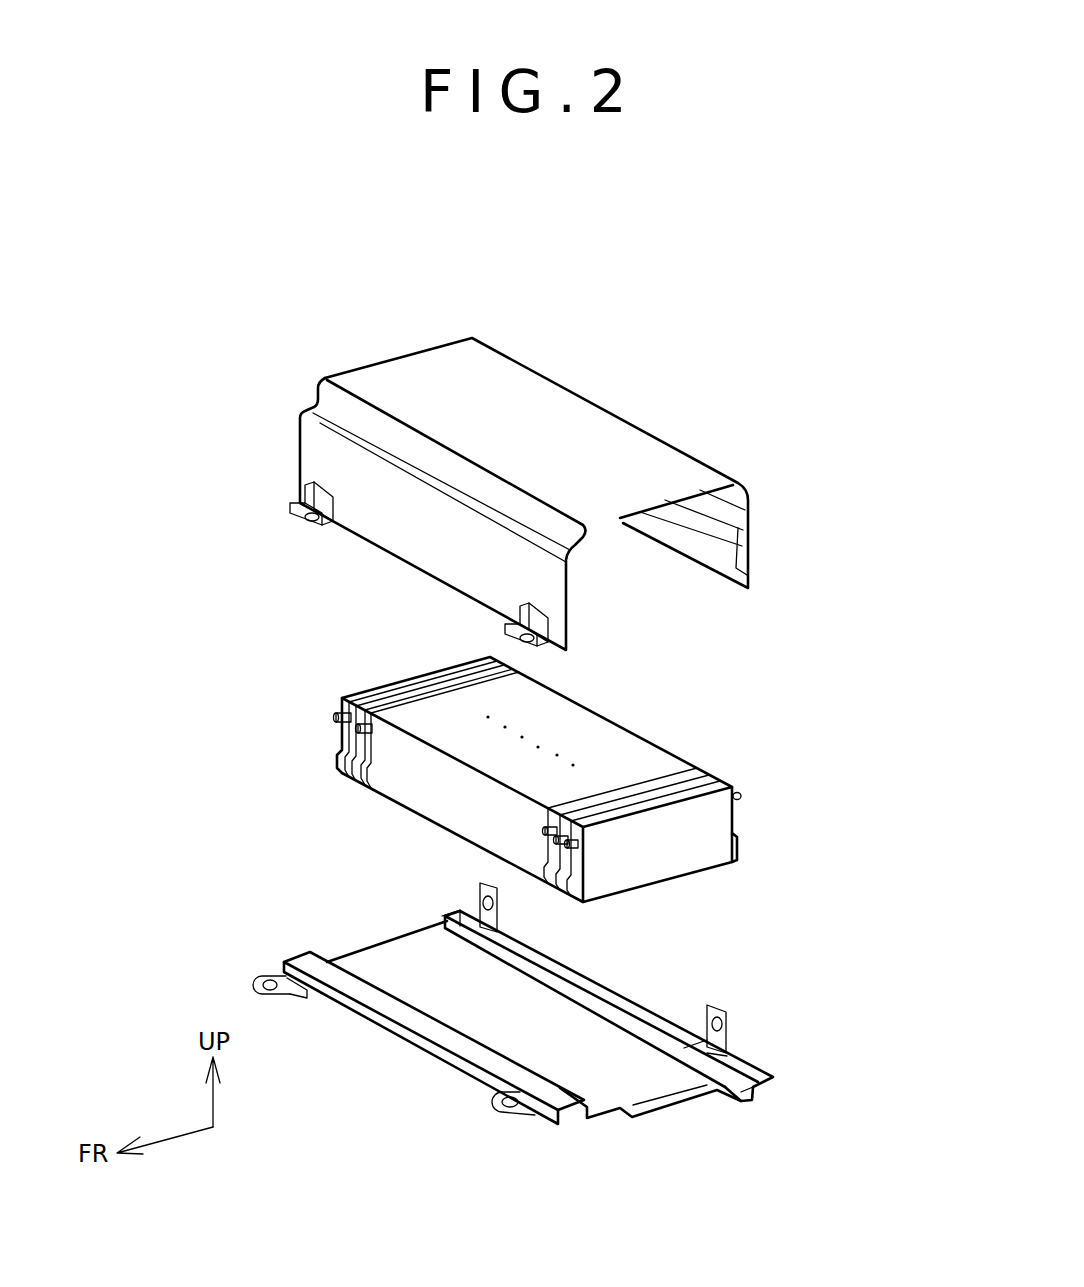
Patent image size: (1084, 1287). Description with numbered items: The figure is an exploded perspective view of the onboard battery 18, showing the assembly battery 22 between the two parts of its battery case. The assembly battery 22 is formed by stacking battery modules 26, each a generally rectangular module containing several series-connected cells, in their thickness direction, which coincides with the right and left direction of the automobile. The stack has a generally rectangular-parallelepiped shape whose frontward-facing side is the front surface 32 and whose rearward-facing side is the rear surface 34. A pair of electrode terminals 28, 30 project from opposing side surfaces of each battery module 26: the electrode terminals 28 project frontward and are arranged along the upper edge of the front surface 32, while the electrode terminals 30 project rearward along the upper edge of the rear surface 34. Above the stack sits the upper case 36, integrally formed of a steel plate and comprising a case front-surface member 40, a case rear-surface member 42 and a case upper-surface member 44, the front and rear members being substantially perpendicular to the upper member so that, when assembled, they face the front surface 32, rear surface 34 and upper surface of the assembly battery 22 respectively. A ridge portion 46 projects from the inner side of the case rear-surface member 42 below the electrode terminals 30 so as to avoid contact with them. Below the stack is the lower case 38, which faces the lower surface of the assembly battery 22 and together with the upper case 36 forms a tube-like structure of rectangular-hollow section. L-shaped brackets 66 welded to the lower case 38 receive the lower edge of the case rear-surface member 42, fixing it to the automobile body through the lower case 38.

The onboard battery 18 is at (723, 358).
The assembly battery 22 is at (720, 730).
The battery module 26 is at (337, 763).
The electrode terminal 28 is at (333, 720).
The electrode terminal 30 is at (742, 797).
The front surface 32 is at (452, 812).
The rear surface 34 is at (740, 837).
The upper case 36 is at (598, 453).
The lower case 38 is at (593, 1043).
The case front-surface member 40 is at (403, 531).
The case rear-surface member 42 is at (752, 543).
The case upper-surface member 44 is at (497, 397).
The ridge portion 46 is at (700, 540).
The L-shaped bracket 66 is at (500, 908).